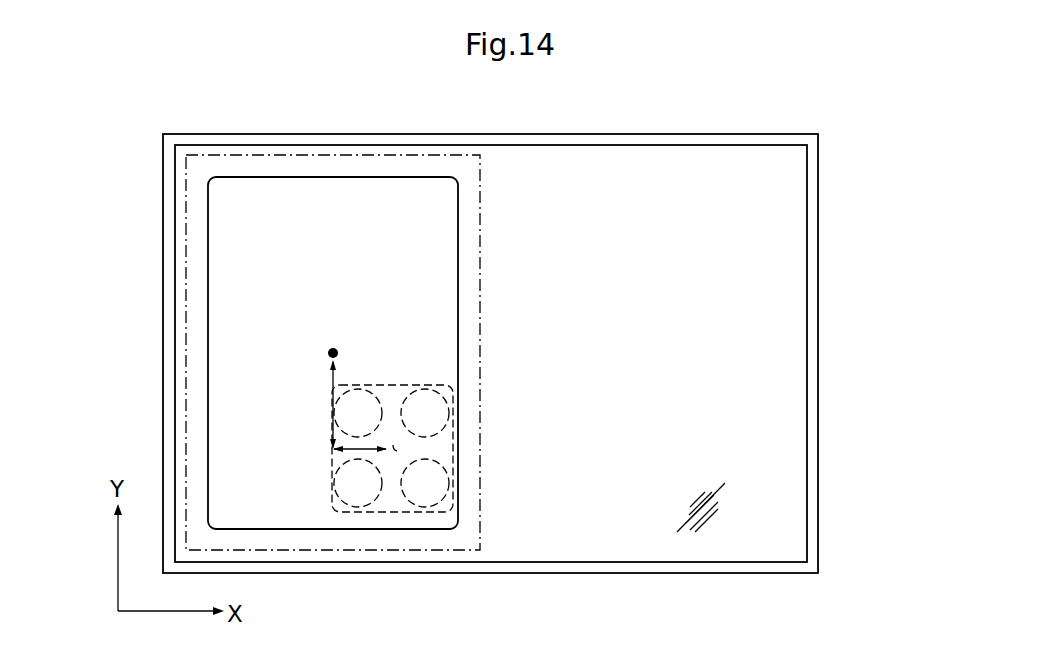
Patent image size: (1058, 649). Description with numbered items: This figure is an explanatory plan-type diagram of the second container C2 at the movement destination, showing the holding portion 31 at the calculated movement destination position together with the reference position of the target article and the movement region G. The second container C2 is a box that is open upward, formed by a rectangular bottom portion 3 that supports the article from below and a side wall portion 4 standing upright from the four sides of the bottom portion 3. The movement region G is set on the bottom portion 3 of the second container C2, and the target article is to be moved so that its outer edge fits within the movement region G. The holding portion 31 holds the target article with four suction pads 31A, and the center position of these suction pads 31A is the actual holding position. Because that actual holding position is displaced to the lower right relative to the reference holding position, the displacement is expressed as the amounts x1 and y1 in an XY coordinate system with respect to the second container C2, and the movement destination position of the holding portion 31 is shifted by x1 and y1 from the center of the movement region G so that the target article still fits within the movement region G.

The side wall portion 4 is at (385, 138).
The movement region G is at (480, 222).
The holding portion 31 is at (455, 400).
The suction pad 31A is at (365, 390).
The Y-direction displacement amount y1 is at (333, 380).
The X-direction displacement amount x1 is at (334, 451).
The second container C2 is at (840, 312).
The bottom portion 3 is at (700, 518).